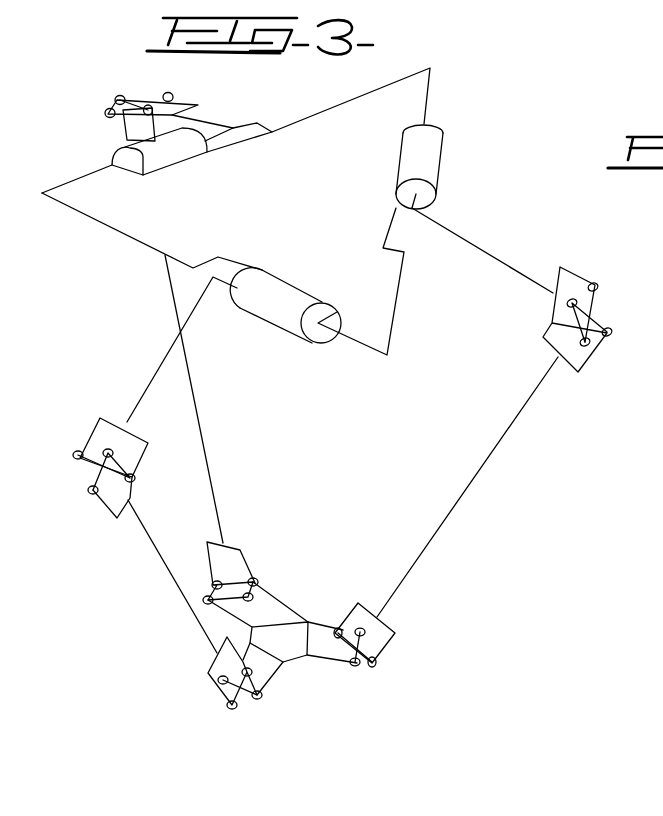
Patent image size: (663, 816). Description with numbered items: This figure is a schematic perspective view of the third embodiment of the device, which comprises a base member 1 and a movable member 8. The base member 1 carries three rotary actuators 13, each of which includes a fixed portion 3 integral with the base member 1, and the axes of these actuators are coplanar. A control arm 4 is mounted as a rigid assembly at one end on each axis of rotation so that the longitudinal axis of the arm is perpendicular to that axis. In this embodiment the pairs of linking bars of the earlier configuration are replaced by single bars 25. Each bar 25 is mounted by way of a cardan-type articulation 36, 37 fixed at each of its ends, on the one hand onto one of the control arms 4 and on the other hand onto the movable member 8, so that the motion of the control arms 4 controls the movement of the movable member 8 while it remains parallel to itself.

The base member 1 is at (325, 118).
The fixed portion 3 is at (428, 152).
The rotary actuator 13 is at (455, 175).
The control arm 4 is at (490, 255).
The articulation of cardan type 36 is at (601, 352).
The single bar 25 is at (482, 470).
The articulation of cardan type 37 is at (380, 660).
The movable member 8 is at (292, 647).